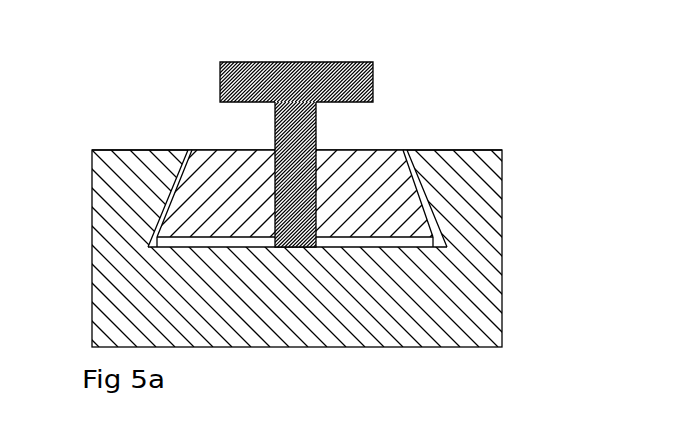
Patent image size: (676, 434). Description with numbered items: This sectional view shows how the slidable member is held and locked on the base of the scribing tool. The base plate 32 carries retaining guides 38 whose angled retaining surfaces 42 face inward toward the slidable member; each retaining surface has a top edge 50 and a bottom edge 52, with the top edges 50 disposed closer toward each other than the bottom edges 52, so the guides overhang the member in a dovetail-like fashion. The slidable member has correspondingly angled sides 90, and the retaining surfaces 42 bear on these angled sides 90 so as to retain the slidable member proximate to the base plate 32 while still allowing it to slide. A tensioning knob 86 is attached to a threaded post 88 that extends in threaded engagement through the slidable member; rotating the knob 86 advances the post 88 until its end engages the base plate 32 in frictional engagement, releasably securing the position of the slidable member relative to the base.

The base plate 32 is at (468, 347).
The retaining guides 38 is at (120, 150).
The angled retaining surfaces 42 is at (165, 197).
The top edges 50 is at (248, 150).
The bottom edges 52 is at (148, 243).
The tensioning knob 86 is at (343, 62).
The threaded post 88 is at (318, 133).
The angled sides 90 is at (160, 240).